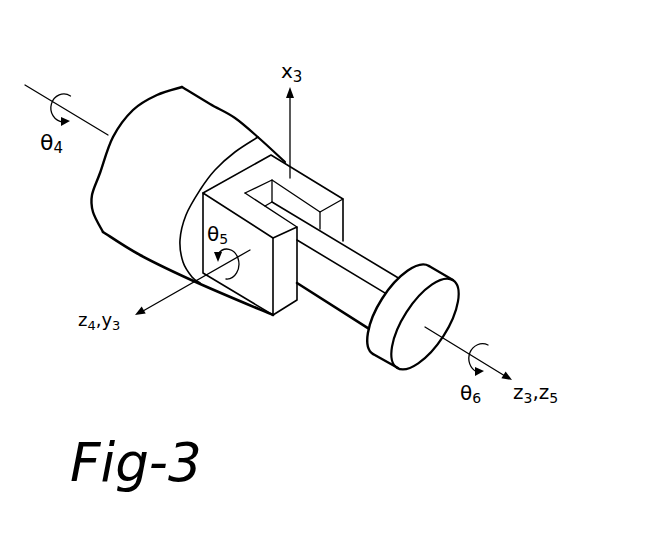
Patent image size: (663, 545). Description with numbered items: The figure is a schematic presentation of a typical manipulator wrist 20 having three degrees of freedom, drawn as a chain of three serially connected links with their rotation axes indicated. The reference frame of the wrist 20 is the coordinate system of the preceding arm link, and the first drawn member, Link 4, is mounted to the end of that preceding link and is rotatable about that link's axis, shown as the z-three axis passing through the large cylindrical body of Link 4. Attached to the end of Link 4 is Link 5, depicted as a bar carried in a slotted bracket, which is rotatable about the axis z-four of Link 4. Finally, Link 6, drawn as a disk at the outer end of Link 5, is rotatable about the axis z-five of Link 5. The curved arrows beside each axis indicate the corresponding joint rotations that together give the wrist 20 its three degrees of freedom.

The Link 4 is at (185, 86).
The Wrist 20 is at (349, 122).
The Link 5 is at (365, 255).
The Link 6 is at (438, 271).